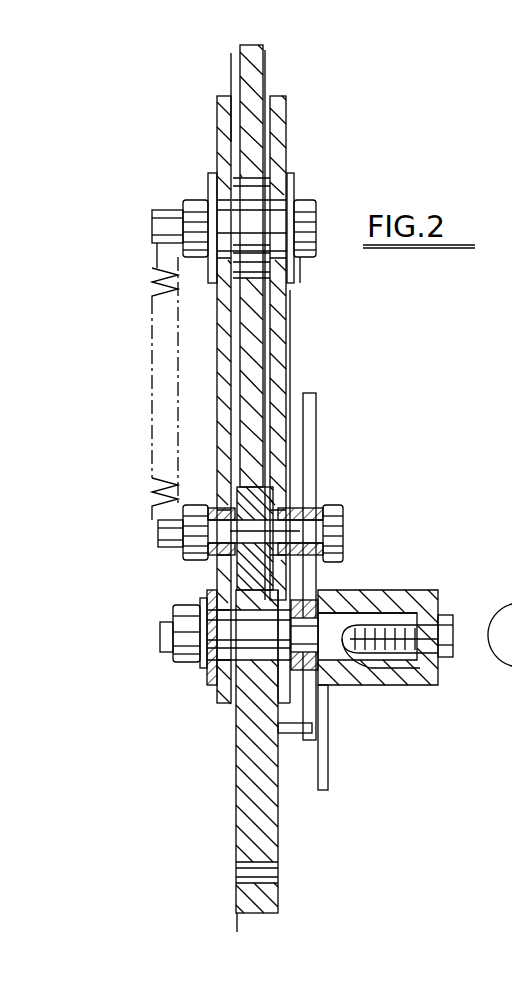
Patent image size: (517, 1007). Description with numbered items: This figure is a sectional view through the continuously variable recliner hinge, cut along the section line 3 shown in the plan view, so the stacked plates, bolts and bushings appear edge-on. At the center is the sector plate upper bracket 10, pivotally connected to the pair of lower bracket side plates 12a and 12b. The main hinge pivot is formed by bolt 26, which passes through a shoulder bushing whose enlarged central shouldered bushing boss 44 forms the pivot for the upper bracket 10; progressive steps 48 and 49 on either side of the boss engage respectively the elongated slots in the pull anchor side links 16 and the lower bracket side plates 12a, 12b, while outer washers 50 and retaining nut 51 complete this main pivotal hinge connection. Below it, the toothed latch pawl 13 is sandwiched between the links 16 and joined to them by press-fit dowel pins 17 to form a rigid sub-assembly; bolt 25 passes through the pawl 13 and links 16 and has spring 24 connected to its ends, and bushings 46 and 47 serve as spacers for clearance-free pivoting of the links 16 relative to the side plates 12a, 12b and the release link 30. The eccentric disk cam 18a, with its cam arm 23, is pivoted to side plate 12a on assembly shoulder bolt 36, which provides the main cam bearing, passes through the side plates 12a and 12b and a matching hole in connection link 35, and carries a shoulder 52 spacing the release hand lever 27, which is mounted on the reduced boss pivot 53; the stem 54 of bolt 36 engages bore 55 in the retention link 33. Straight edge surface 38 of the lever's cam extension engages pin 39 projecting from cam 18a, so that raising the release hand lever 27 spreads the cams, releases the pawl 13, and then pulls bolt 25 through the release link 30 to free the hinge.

The section line 3- 3 is at (230, 62).
The sector plate upper bracket 10 is at (262, 68).
The lower bracket side plate 12a is at (288, 301).
The lower bracket side plate 12b is at (272, 326).
The toothed latch pawl 13 is at (273, 508).
The pull anchor side links 16 is at (270, 352).
The dowel pins 17 is at (285, 467).
The eccentric disk cam 18a is at (252, 690).
The cam arm 23 is at (268, 818).
The spring 24 is at (152, 340).
The bolt 25 is at (350, 497).
The bolt 26 is at (318, 224).
The release hand lever 27 is at (305, 592).
The release link 30 is at (330, 786).
The retention link 33 is at (432, 682).
The connection link 35 is at (212, 672).
The assembly shoulder bolt 36 is at (300, 628).
The straight edge surface 38 is at (320, 735).
The pin 39 is at (298, 727).
The central shouldered bushing boss 44 is at (217, 180).
The bushing 46 is at (210, 556).
The bushing 47 is at (345, 530).
The progressive step 48 is at (287, 186).
The progressive step 49 is at (292, 200).
The outer washers 50 is at (168, 270).
The retaining nut 51 is at (188, 206).
The shoulder 52 is at (320, 704).
The reduced boss pivot 53 is at (352, 683).
The stem 54 is at (396, 592).
The bore 55 is at (420, 602).